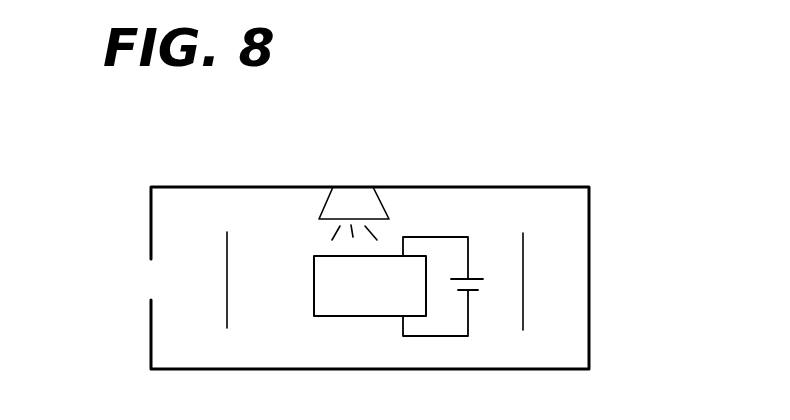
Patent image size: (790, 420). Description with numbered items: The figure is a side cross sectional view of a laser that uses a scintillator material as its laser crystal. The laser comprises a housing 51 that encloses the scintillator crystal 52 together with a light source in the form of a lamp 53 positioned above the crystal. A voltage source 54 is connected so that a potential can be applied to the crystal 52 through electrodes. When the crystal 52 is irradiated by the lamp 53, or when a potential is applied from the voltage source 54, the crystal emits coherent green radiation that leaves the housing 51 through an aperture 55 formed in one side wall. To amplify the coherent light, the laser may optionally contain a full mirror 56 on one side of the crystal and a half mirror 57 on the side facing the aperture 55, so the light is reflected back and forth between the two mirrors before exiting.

The housing 51 is at (589, 214).
The scintillator crystal 52 is at (352, 302).
The lamp 53 is at (383, 207).
The voltage source 54 is at (470, 313).
The aperture 55 is at (153, 277).
The full mirror 56 is at (524, 265).
The half mirror 57 is at (227, 315).